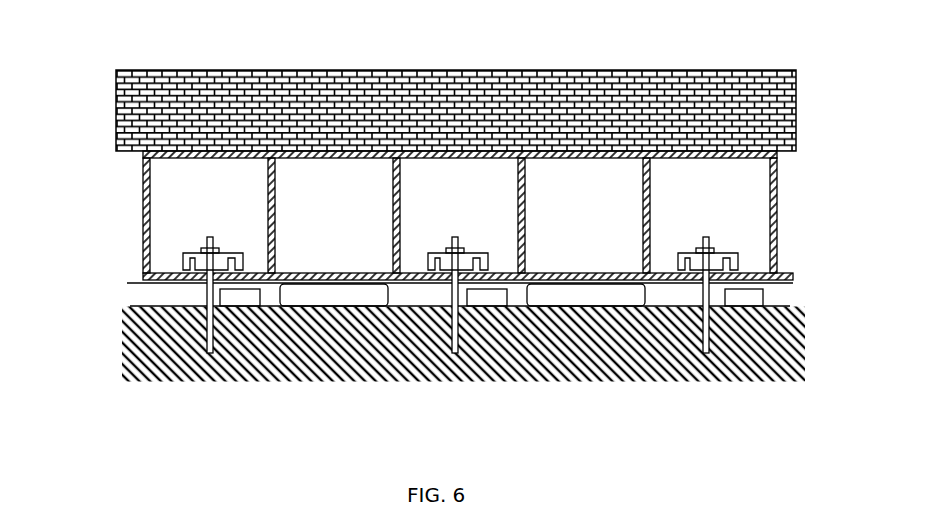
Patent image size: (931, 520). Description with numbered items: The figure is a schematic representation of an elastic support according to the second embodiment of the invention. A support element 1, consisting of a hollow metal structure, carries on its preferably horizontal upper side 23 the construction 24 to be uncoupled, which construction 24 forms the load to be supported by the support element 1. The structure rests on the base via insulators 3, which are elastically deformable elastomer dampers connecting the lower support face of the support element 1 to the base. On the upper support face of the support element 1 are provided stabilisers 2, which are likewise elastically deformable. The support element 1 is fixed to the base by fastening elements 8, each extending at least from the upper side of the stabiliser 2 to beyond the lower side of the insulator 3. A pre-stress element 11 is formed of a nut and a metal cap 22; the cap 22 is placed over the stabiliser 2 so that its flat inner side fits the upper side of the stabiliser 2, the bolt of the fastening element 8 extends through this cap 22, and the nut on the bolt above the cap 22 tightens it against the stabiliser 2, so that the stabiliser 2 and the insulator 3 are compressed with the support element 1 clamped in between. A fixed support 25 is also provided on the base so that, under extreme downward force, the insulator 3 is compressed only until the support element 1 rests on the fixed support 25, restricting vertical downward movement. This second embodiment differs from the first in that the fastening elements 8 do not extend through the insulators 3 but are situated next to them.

The support element 1 is at (142, 212).
The stabiliser 2 is at (190, 267).
The insulator 3 is at (330, 290).
The fastening element 8 is at (207, 297).
The pre-stress element 11 is at (712, 246).
The cap 22 is at (680, 256).
The upper side 23 is at (675, 152).
The construction 24 is at (267, 96).
The fixed support 25 is at (743, 297).